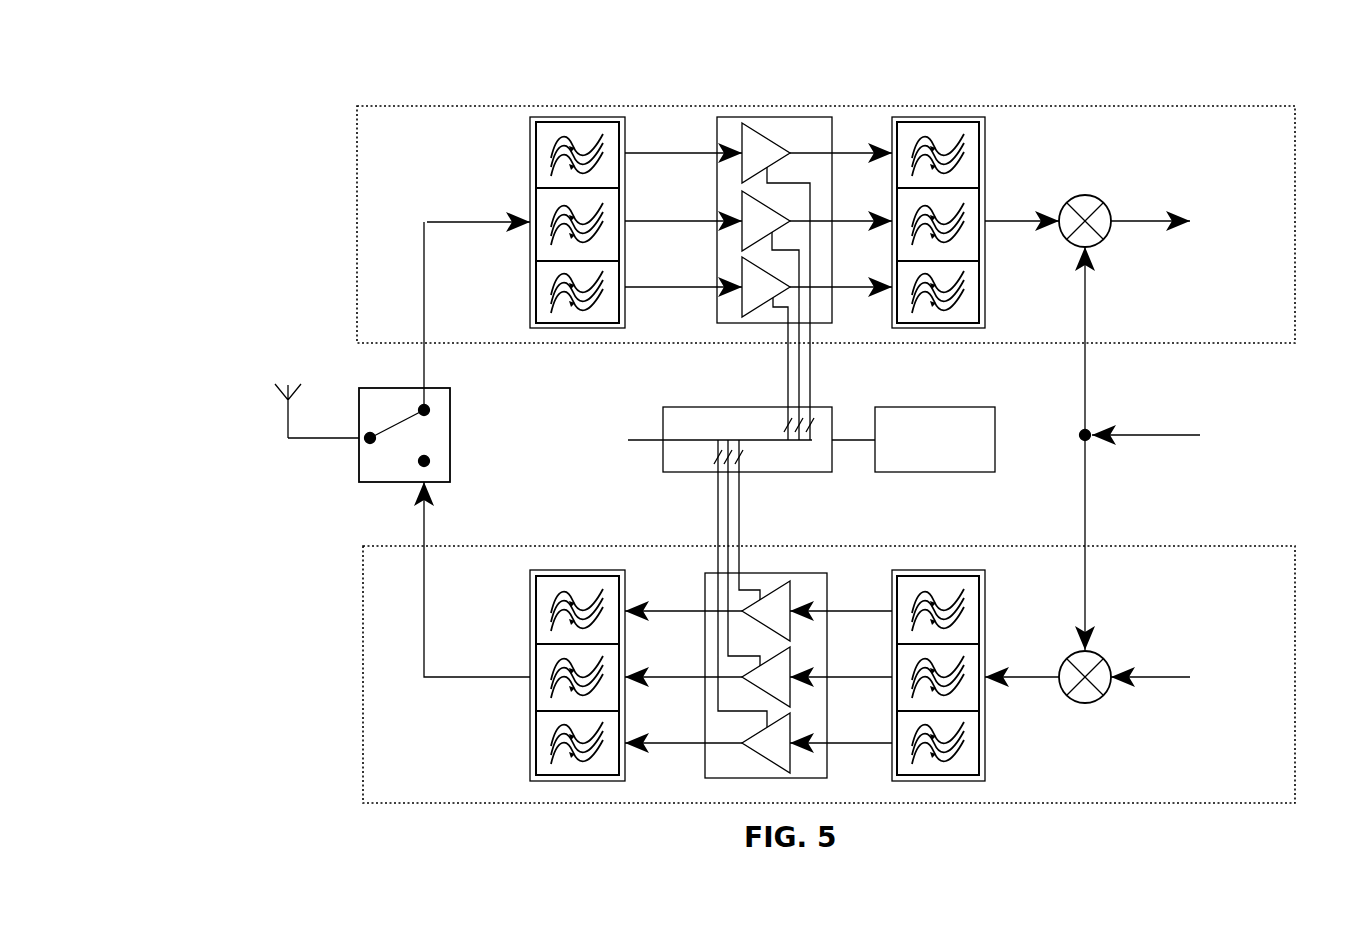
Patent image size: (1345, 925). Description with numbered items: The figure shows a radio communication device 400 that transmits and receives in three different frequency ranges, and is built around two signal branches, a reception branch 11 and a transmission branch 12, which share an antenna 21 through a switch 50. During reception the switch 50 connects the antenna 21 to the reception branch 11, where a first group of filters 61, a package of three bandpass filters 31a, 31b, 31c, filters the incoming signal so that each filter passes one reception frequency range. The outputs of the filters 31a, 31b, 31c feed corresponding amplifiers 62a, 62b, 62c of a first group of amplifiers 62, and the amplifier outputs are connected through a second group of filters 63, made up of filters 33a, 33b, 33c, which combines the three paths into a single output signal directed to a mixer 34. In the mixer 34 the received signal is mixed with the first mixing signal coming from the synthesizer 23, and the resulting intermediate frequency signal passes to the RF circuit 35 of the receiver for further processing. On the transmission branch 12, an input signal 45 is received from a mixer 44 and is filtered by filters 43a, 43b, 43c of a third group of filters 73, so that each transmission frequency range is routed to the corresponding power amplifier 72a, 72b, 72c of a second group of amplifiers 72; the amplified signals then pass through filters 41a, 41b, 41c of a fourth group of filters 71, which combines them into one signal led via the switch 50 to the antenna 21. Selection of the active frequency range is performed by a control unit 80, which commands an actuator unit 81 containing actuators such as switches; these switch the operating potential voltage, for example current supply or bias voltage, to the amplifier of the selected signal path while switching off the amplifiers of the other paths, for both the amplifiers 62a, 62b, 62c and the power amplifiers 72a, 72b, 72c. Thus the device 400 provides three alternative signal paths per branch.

The radio communication device 400 is at (238, 68).
The reception branch 11 is at (1296, 150).
The transmission branch 12 is at (1296, 583).
The antenna 21 is at (304, 413).
The synthesizer 23 is at (1163, 431).
The bandpass filter 31a is at (536, 155).
The bandpass filter 31b is at (536, 213).
The bandpass filter 31c is at (536, 289).
The bandpass filter 33a is at (982, 167).
The bandpass filter 33b is at (982, 207).
The bandpass filter 33c is at (982, 302).
The mixer 34 is at (1090, 198).
The RF circuit 35 is at (1171, 221).
The bandpass filter 41a is at (536, 753).
The bandpass filter 41b is at (536, 672).
The bandpass filter 41c is at (536, 615).
The bandpass filter 43a is at (983, 747).
The bandpass filter 43b is at (983, 657).
The bandpass filter 43c is at (983, 611).
The mixer 44 is at (1088, 702).
The transmit input signal 45 is at (1170, 683).
The switch 50 is at (360, 455).
The first group of filters 61 is at (591, 117).
The first group of amplifiers 62 is at (781, 117).
The amplifier 62a is at (742, 140).
The amplifier 62b is at (742, 207).
The amplifier 62c is at (742, 272).
The second group of filters 63 is at (953, 117).
The fourth group of filters 71 is at (563, 571).
The second group of amplifiers 72 is at (715, 779).
The power amplifier 72a is at (790, 733).
The power amplifier 72b is at (790, 660).
The power amplifier 72c is at (790, 594).
The third group of filters 73 is at (937, 569).
The control unit 80 is at (935, 439).
The actuator unit 81 is at (697, 407).